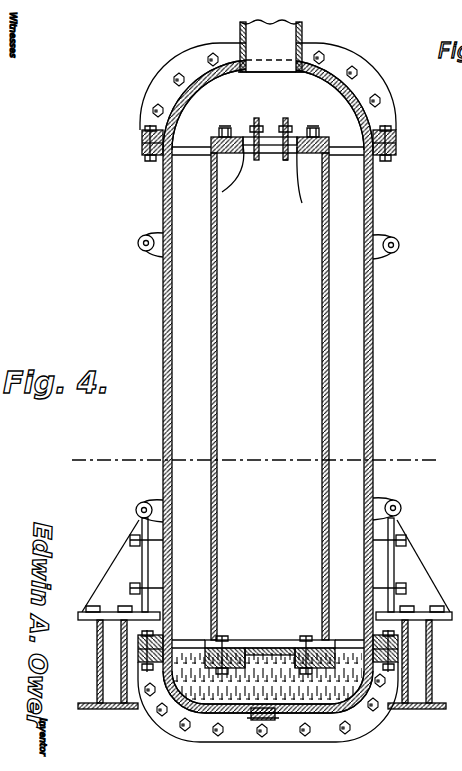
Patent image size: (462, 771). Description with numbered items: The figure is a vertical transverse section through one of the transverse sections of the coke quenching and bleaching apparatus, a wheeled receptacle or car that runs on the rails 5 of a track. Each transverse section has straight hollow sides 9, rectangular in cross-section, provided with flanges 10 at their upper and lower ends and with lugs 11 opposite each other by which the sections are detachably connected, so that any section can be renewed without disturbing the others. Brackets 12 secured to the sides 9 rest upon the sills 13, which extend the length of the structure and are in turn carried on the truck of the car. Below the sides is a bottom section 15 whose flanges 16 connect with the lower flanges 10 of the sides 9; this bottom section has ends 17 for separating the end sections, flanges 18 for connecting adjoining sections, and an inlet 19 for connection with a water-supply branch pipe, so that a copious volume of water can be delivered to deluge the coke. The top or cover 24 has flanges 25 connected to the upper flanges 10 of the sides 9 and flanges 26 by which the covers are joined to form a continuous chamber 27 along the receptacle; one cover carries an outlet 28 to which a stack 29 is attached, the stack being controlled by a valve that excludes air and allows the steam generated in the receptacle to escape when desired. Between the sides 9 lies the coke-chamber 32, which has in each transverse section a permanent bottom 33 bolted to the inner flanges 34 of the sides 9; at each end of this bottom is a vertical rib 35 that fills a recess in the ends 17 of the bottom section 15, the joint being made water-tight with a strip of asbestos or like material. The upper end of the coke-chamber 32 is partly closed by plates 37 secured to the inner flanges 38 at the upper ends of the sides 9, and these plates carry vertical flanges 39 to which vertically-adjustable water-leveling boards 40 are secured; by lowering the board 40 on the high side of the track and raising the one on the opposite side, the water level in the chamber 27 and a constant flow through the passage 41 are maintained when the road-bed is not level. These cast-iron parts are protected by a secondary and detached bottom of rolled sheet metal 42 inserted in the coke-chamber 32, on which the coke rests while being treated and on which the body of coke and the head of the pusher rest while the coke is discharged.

The rails 5 is at (252, 463).
The hollow sides 9 is at (266, 386).
The flanges 10 is at (142, 151).
The lugs 11 is at (150, 251).
The brackets 12 is at (118, 563).
The sills 13 is at (114, 656).
The bottom section 15 is at (178, 703).
The flanges 16 is at (143, 657).
The ends 17 is at (268, 678).
The flanges 18 is at (328, 730).
The inlet 19 is at (257, 721).
The top or cover 24 is at (163, 85).
The flanges 25 is at (142, 135).
The flanges 26 is at (368, 82).
The chamber 27 is at (266, 126).
The outlet 28 is at (241, 76).
The stack 29 is at (300, 40).
The coke-chamber 32 is at (270, 388).
The permanent bottom 33 is at (277, 636).
The inner flanges 34 is at (233, 634).
The vertical rib 35 is at (270, 665).
The plates 37 is at (268, 157).
The inner flanges 38 is at (266, 183).
The vertical flanges 39 is at (226, 120).
The water-leveling boards 40 is at (256, 122).
The passage 41 is at (272, 146).
The secondary bottom of rolled sheet metal 42 is at (265, 640).